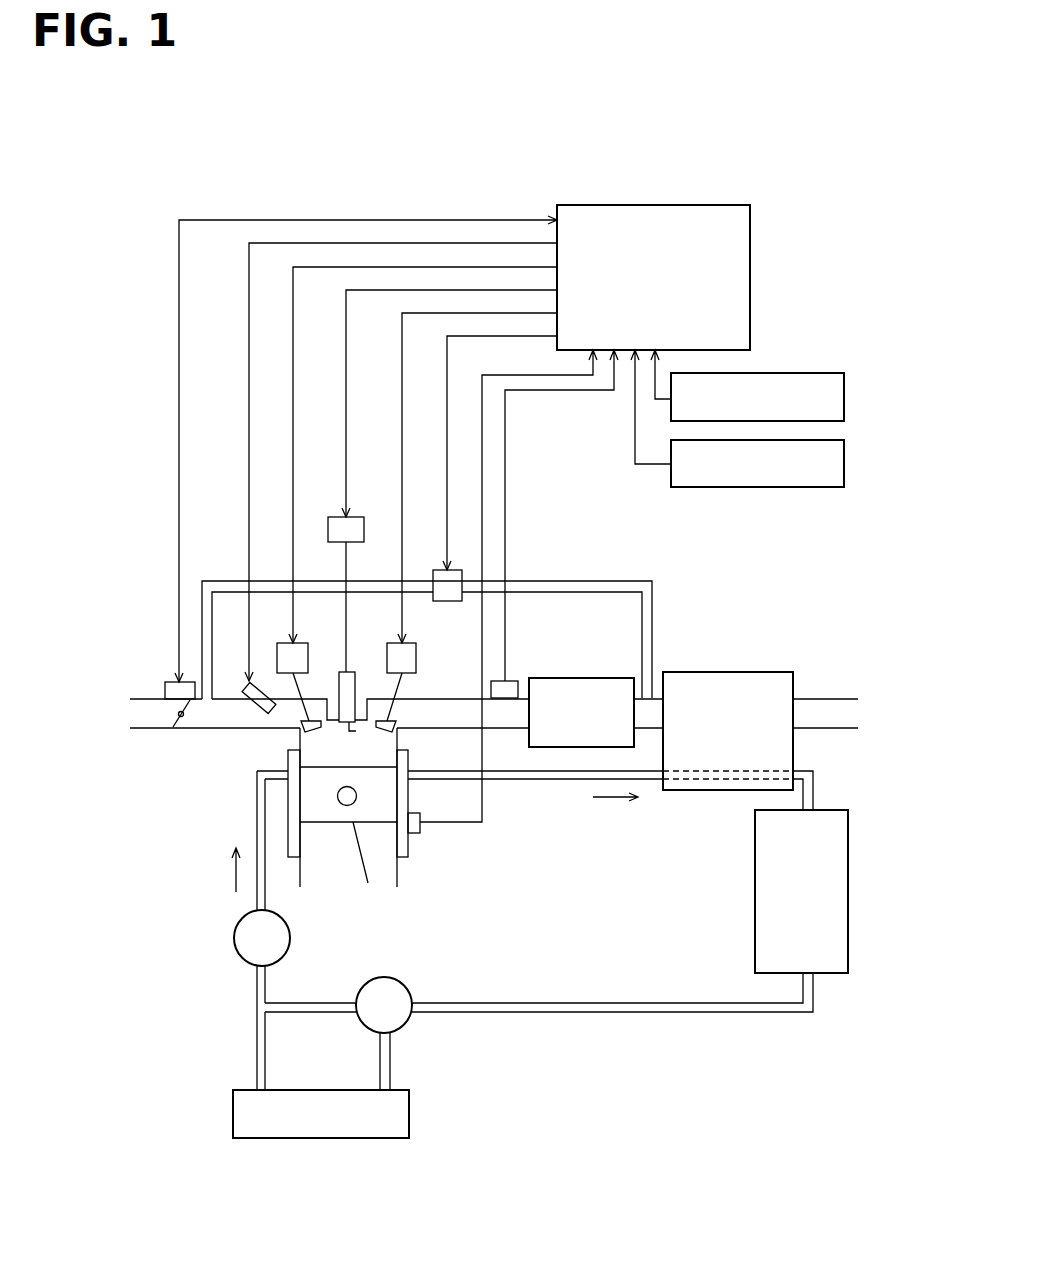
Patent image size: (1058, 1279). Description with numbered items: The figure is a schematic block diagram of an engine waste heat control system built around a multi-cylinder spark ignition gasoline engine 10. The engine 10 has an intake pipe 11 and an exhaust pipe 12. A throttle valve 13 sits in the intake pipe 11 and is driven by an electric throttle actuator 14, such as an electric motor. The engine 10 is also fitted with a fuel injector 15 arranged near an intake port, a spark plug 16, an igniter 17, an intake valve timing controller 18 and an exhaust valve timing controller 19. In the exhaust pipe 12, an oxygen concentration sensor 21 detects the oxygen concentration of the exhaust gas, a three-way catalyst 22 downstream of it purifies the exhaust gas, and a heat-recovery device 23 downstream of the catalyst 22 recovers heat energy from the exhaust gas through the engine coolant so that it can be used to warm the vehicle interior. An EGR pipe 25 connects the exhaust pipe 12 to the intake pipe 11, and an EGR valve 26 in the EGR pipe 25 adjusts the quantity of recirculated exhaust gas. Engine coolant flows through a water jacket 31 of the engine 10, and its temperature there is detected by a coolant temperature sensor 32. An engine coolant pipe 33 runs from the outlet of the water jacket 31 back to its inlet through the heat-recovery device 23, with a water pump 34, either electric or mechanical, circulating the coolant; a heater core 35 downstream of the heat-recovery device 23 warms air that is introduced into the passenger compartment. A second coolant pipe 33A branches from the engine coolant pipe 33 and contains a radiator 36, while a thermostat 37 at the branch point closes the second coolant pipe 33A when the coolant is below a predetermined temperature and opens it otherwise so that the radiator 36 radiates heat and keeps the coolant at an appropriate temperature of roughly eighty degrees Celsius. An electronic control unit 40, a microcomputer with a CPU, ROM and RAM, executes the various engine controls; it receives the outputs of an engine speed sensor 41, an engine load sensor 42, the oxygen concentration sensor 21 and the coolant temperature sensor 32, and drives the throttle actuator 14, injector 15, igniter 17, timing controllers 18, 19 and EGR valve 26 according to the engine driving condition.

The engine 10 is at (143, 504).
The intake pipe 11 is at (226, 730).
The exhaust pipe 12 is at (445, 730).
The throttle valve 13 is at (176, 731).
The throttle actuator 14 is at (167, 680).
The fuel injector 15 is at (245, 696).
The spark plug 16 is at (358, 667).
The igniter 17 is at (362, 516).
The intake valve timing controller 18 is at (305, 642).
The exhaust valve timing controller 19 is at (418, 645).
The oxygen concentration sensor 21 is at (516, 680).
The three-way catalyst 22 is at (592, 678).
The heat-recovery device 23 is at (773, 671).
The EGR pipe 25 is at (594, 580).
The EGR valve 26 is at (437, 568).
The water jacket 31 is at (412, 843).
The coolant temperature sensor 32 is at (423, 813).
The engine coolant pipe 33 is at (560, 780).
The second coolant pipe 33A is at (392, 1068).
The water pump 34 is at (292, 928).
The heater core 35 is at (850, 895).
The radiator 36 is at (410, 1116).
The thermostat 37 is at (398, 980).
The electronic control unit 40 is at (726, 204).
The engine speed sensor 41 is at (846, 398).
The engine load sensor 42 is at (846, 462).